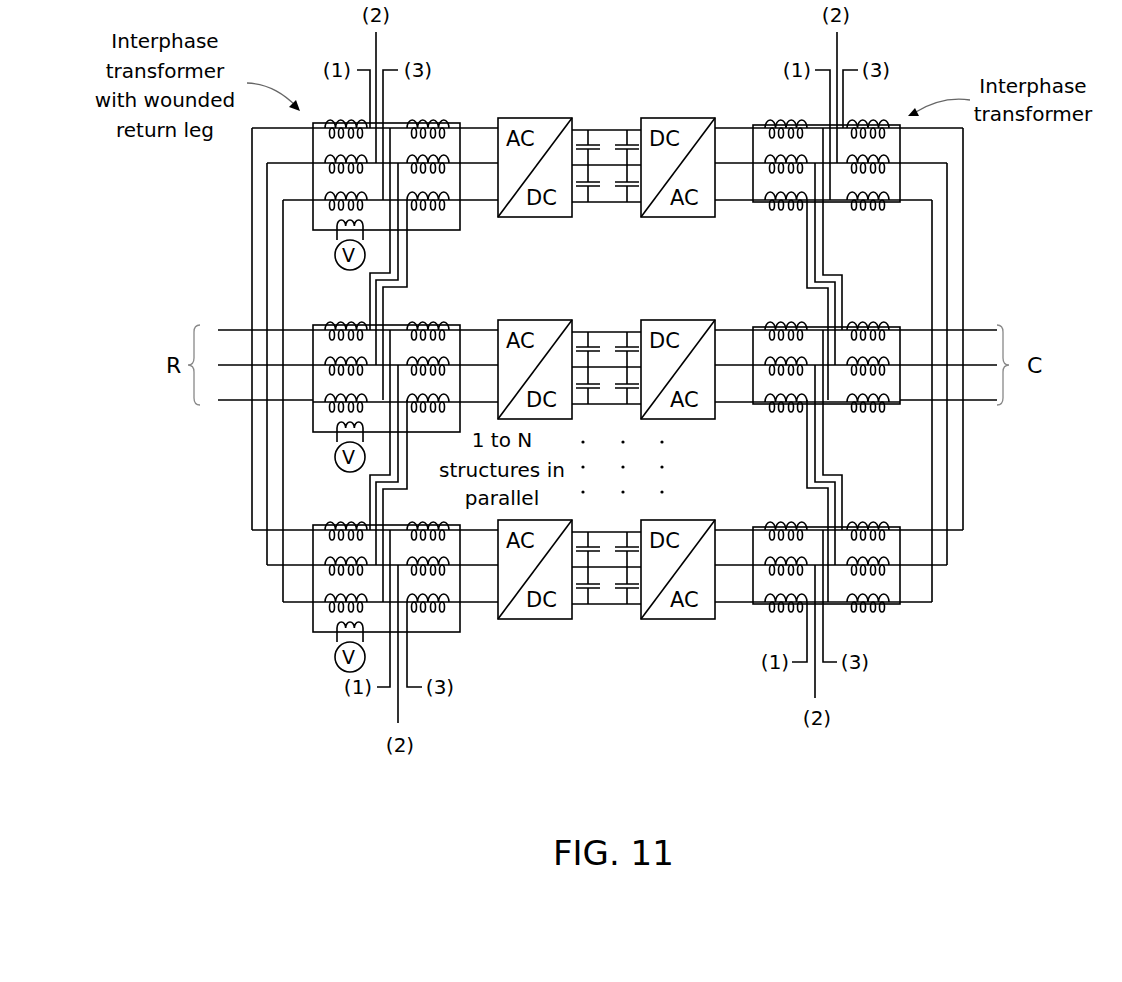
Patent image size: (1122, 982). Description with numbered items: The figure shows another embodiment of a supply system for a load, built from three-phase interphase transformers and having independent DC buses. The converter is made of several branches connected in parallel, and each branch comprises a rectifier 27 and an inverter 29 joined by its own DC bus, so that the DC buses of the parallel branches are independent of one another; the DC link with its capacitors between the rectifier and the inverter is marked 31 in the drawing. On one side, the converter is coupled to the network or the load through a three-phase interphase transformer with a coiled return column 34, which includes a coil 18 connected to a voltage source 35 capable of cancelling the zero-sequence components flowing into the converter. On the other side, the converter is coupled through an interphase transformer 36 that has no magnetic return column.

The coil 18 is at (331, 636).
The rectifier 27 is at (558, 118).
The inverter 29 is at (697, 118).
The DC link capacitor bank 31 is at (607, 204).
The three-phase interphase transformer with a coiled return column 34 is at (451, 655).
The voltage source 35 is at (343, 669).
The interphase transformer 36 is at (879, 672).